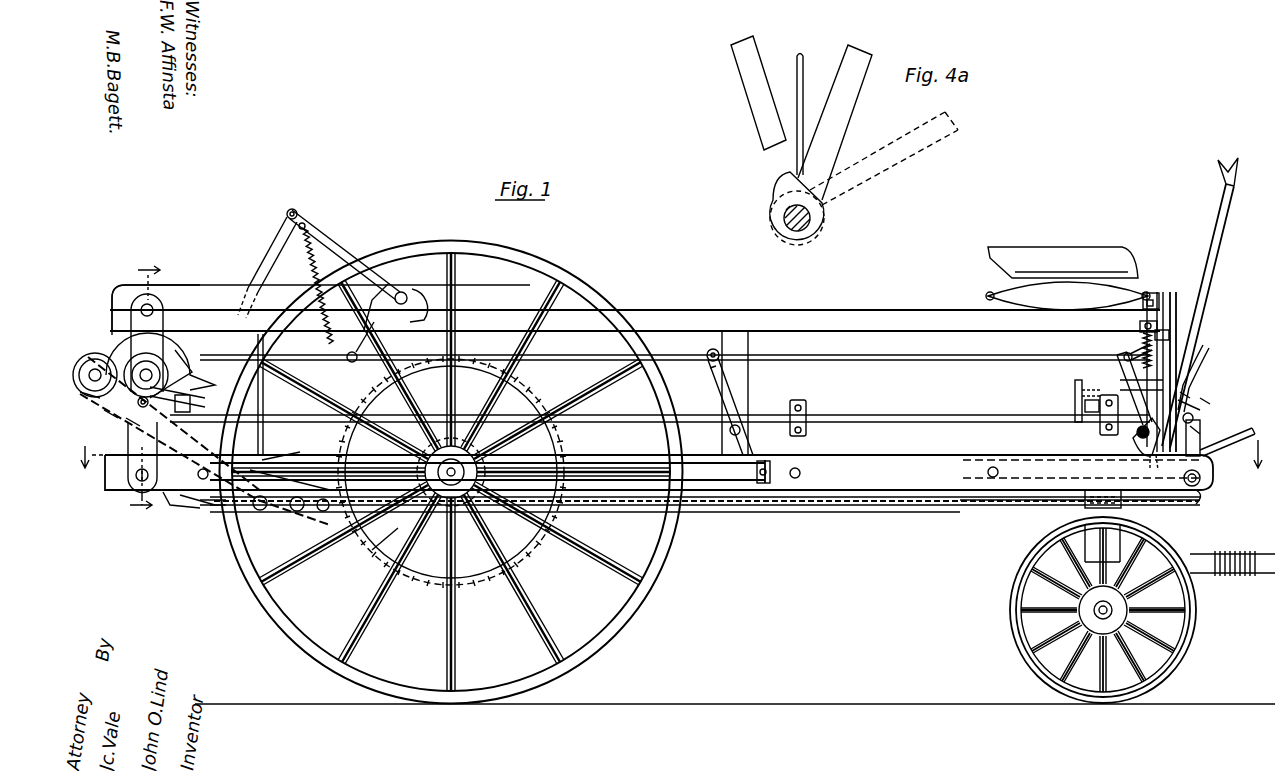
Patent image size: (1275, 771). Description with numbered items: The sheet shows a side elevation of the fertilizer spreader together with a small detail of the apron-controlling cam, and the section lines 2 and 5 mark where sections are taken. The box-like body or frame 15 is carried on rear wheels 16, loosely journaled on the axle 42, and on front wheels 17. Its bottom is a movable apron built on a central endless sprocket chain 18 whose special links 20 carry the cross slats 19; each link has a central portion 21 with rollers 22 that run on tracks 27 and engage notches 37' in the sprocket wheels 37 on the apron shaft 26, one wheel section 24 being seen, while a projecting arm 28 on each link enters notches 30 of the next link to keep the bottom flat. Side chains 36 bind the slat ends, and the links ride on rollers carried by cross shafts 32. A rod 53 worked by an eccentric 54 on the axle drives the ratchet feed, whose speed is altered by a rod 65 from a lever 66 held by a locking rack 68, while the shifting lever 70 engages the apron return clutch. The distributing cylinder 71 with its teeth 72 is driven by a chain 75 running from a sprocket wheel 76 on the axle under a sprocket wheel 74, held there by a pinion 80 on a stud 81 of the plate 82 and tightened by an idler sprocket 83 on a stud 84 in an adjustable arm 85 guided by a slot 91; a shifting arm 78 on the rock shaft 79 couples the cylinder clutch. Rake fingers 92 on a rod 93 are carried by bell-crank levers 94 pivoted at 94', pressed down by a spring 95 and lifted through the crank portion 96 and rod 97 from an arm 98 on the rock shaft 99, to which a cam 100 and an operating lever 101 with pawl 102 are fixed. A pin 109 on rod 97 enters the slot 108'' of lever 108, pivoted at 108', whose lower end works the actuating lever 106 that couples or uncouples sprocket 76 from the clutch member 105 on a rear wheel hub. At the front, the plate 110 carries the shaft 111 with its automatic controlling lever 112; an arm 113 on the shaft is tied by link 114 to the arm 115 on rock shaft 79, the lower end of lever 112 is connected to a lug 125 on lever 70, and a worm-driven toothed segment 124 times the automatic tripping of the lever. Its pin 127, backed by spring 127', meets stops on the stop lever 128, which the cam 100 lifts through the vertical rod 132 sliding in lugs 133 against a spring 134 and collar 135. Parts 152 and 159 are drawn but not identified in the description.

In FIG. 1, the section line 2 is at (670, 454).
In FIG. 1, the section line 5 is at (145, 389).
In FIG. 1, the body 15 is at (659, 398).
In FIG. 1, the rear supporting wheels 16 is at (657, 561).
In FIG. 1, the front wheels 17 is at (1011, 607).
In FIG. 1, the endless driving sprocket chain 18 is at (1003, 498).
In FIG. 1, the cross slats 19 is at (266, 509).
In FIG. 1, the special links 20 is at (326, 511).
In FIG. 1, the central portion 21 is at (262, 480).
In FIG. 1, the rollers 22 is at (268, 515).
In FIG. 1, the sprocket wheel section 24 is at (172, 502).
In FIG. 1, the apron driving shaft 26 is at (198, 474).
In FIG. 1, the tracks 27 is at (802, 510).
In FIG. 1, the projecting arm 28 is at (286, 462).
In FIG. 1, the notches 30 is at (298, 511).
In FIG. 1, the cross shafts 32 is at (801, 470).
In FIG. 1, the chains 36 is at (186, 506).
In FIG. 1, the sprocket wheels 37 is at (212, 525).
In FIG. 1, the notches 37' is at (239, 442).
In FIG. 1, the axle 42 is at (458, 510).
In FIG. 1, the eccentric rod 53 is at (1222, 479).
In FIG. 1, the eccentric 54 is at (1199, 484).
In FIG. 1, the rod 65 is at (1010, 452).
In FIG. 1, the lever 66 is at (1186, 395).
In FIG. 1, the locking rack 68 is at (1246, 443).
In FIG. 1, the shifting lever 70 is at (1035, 486).
In FIG. 1, the distributing cylinder 71 is at (196, 366).
In FIG. 1, the teeth 72 is at (104, 321).
In FIG. 1, the sprocket wheel 74 is at (146, 362).
In FIG. 1, the chain 75 is at (374, 549).
In FIG. 1, the sprocket wheel 76 is at (428, 580).
In FIG. 1, the shifting arm 78 is at (192, 401).
In FIG. 1, the rock shaft 79 is at (860, 421).
In FIG. 1, the pinion 80 is at (128, 424).
In FIG. 1, the stud 81 is at (144, 465).
In FIG. 1, the plate 82 is at (128, 470).
In FIG. 1, the idler sprocket 83 is at (88, 360).
In FIG. 1, the stud 84 is at (94, 387).
In FIG. 1, the adjustable arm 85 is at (104, 422).
In FIG. 1, the transversely extending slot 91 is at (131, 398).
In FIG. 1, the rake fingers 92 is at (266, 258).
In FIG. 1, the rod 93 is at (298, 214).
In FIG. 1, the levers 94 is at (345, 255).
In FIG. 1, the pivot 94' is at (407, 301).
In FIG. 1, the spring 95 is at (314, 271).
In FIG. 1, the crank portion 96 is at (347, 345).
In FIG. 1, the operating rod 97 is at (856, 359).
In FIG. 1, the arm 98 is at (1125, 388).
In FIG. 4a, the arm 98 is at (748, 100).
In FIG. 1, the rock shaft 99 is at (1137, 433).
In FIG. 4a, the rock shaft 99 is at (812, 222).
In FIG. 1, the cam 100 is at (1146, 448).
In FIG. 4a, the cam 100 is at (772, 195).
In FIG. 1, the operating lever 101 is at (1212, 262).
In FIG. 4a, the operating lever 101 is at (850, 101).
In FIG. 1, the pawl 102 is at (1208, 372).
In FIG. 1, the clutch member 105 is at (1196, 418).
In FIG. 1, the actuating lever 106 is at (703, 468).
In FIG. 1, the lever 108 is at (717, 406).
In FIG. 1, the pivot 108' is at (759, 438).
In FIG. 1, the slot 108'' is at (695, 378).
In FIG. 1, the pin 109 is at (710, 352).
In FIG. 1, the plate 110 is at (1190, 340).
In FIG. 1, the shaft 111 is at (1206, 401).
In FIG. 1, the automatic controlling lever 112 is at (1190, 356).
In FIG. 1, the arm 113 is at (1072, 407).
In FIG. 1, the link 114 is at (1078, 382).
In FIG. 1, the arm 115 is at (1081, 393).
In FIG. 1, the toothed segment 124 is at (1200, 440).
In FIG. 1, the lug 125 is at (1196, 406).
In FIG. 1, the pin 127 is at (1220, 363).
In FIG. 1, the spring 127' is at (1225, 371).
In FIG. 1, the stop lever 128 is at (1153, 292).
In FIG. 4a, the vertical rod 132 is at (798, 62).
In FIG. 1, the lugs 133 is at (1140, 327).
In FIG. 1, the spring 134 is at (1128, 353).
In FIG. 1, the collar 135 is at (1140, 350).
In FIG. 1, the seat spring 152 is at (1068, 278).
In FIG. 1, the block 159 is at (772, 474).